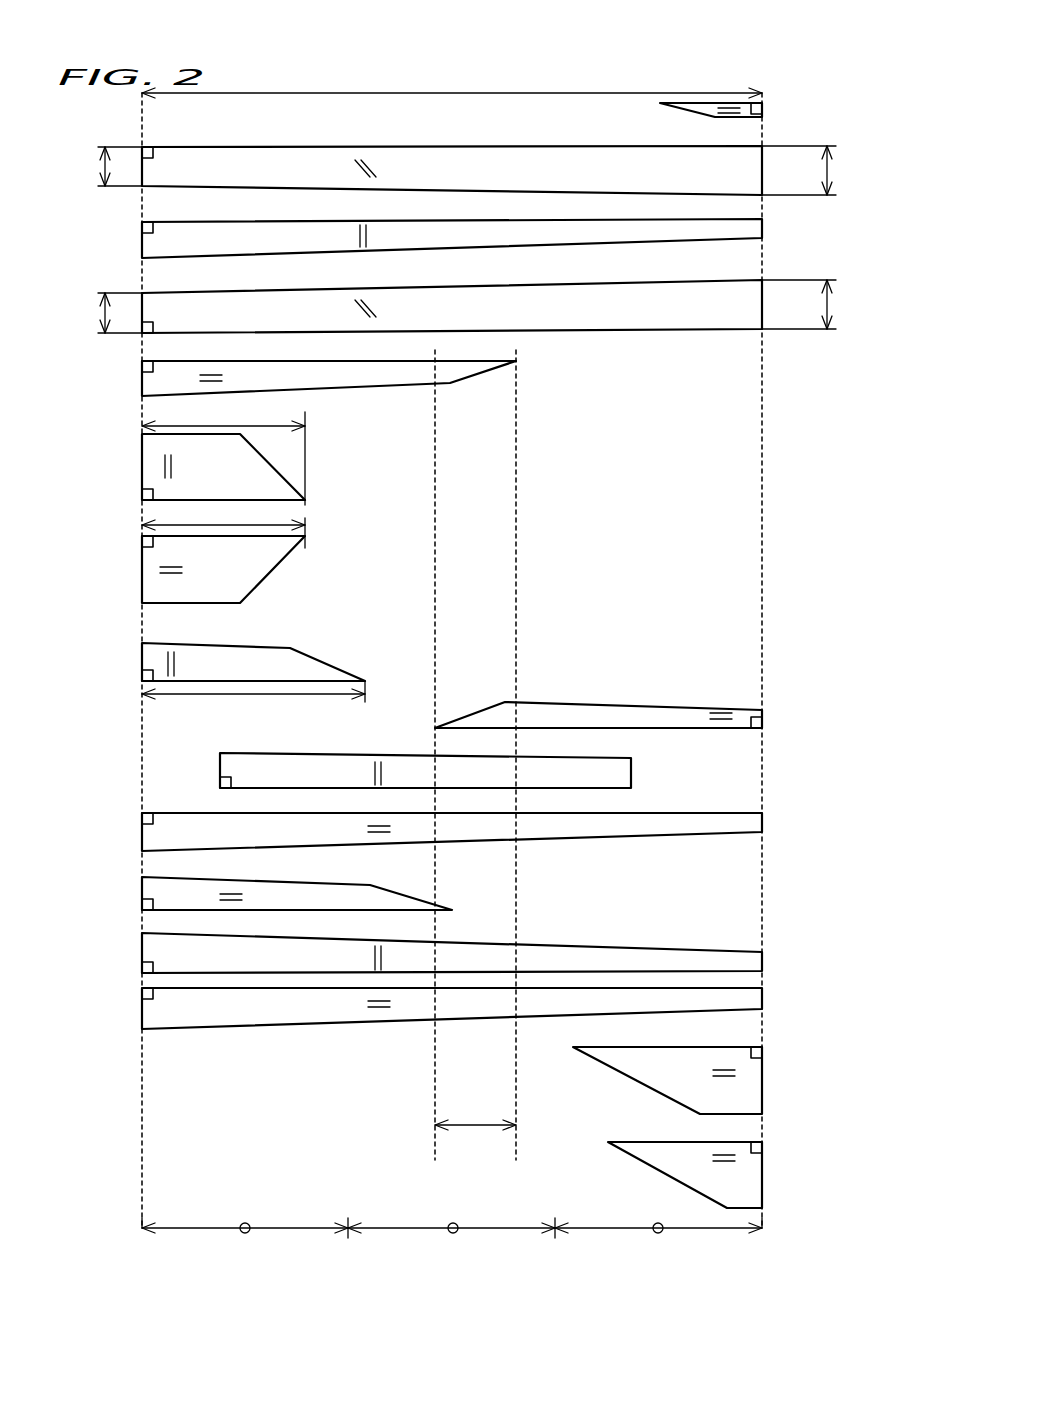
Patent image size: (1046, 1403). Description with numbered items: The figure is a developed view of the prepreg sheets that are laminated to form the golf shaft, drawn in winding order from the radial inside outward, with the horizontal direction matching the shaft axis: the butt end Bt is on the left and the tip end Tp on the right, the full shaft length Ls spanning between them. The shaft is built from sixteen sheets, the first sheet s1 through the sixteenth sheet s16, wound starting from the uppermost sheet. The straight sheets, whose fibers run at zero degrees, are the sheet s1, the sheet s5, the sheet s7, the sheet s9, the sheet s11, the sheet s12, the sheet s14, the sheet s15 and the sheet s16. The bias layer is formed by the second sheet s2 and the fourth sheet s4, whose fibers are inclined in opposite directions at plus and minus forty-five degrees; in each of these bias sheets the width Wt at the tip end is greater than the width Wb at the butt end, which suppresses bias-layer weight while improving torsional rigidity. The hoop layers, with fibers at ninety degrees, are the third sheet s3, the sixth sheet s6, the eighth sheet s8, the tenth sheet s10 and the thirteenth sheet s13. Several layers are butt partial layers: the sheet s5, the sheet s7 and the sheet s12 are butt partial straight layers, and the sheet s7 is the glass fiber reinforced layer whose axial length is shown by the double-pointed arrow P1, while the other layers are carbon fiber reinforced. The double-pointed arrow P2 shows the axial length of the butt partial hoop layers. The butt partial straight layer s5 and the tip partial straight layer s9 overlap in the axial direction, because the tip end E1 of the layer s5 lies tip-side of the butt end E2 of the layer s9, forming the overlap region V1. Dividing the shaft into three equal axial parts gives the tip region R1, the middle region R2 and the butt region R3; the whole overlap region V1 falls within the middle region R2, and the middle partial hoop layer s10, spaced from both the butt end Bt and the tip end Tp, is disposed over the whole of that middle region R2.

The first sheet s1 is at (764, 117).
The second sheet s2 is at (748, 170).
The third sheet s3 is at (752, 231).
The fourth sheet s4 is at (742, 315).
The fifth sheet s5 is at (462, 372).
The sixth sheet s6 is at (258, 486).
The seventh sheet s7 is at (258, 572).
The eighth sheet s8 is at (285, 665).
The ninth sheet s9 is at (758, 710).
The tenth sheet s10 is at (592, 773).
The eleventh sheet s11 is at (756, 820).
The twelfth sheet s12 is at (372, 897).
The thirteenth sheet s13 is at (752, 962).
The fourteenth sheet s14 is at (752, 997).
The fifteenth sheet s15 is at (752, 1077).
The sixteenth sheet s16 is at (752, 1172).
The tip end of the butt partial straight layer E1 is at (516, 361).
The butt end of the tip partial straight layer E2 is at (434, 727).
The axial-direction length of the glass fiber reinforced layer P1 is at (200, 525).
The axial-direction length of the butt partial hoop layer P2 is at (225, 426).
The shaft length Ls is at (452, 78).
The width at the butt end Wb is at (96, 240).
The width at the tip end Wt is at (816, 237).
The overlap region V1 is at (475, 1144).
The tip region R1 is at (658, 1245).
The middle region R2 is at (451, 1245).
The butt region R3 is at (245, 1245).
The butt end Bt is at (142, 1242).
The tip end Tp is at (759, 1242).